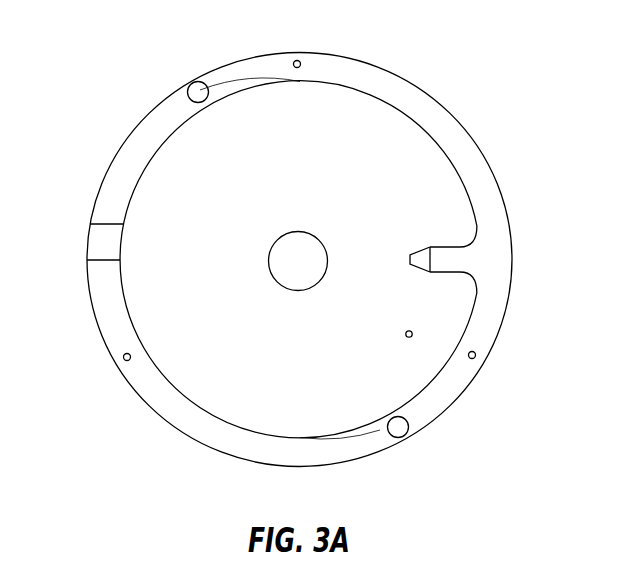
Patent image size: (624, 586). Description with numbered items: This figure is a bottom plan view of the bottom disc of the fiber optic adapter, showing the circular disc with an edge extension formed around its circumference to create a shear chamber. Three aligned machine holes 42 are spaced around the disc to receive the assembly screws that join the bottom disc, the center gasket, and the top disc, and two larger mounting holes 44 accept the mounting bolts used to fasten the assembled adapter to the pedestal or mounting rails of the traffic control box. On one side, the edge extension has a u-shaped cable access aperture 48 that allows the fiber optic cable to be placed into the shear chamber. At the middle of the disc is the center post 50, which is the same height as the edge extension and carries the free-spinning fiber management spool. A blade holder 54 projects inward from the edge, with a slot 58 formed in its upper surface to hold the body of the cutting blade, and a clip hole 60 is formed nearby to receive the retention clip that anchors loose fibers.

The machine holes 42 is at (296, 60).
The mounting holes 44 is at (198, 81).
The u-shaped cable access aperture 48 is at (98, 247).
The center post 50 is at (296, 232).
The blade holder 54 is at (453, 258).
The slot 58 is at (421, 255).
The clip hole 60 is at (407, 330).